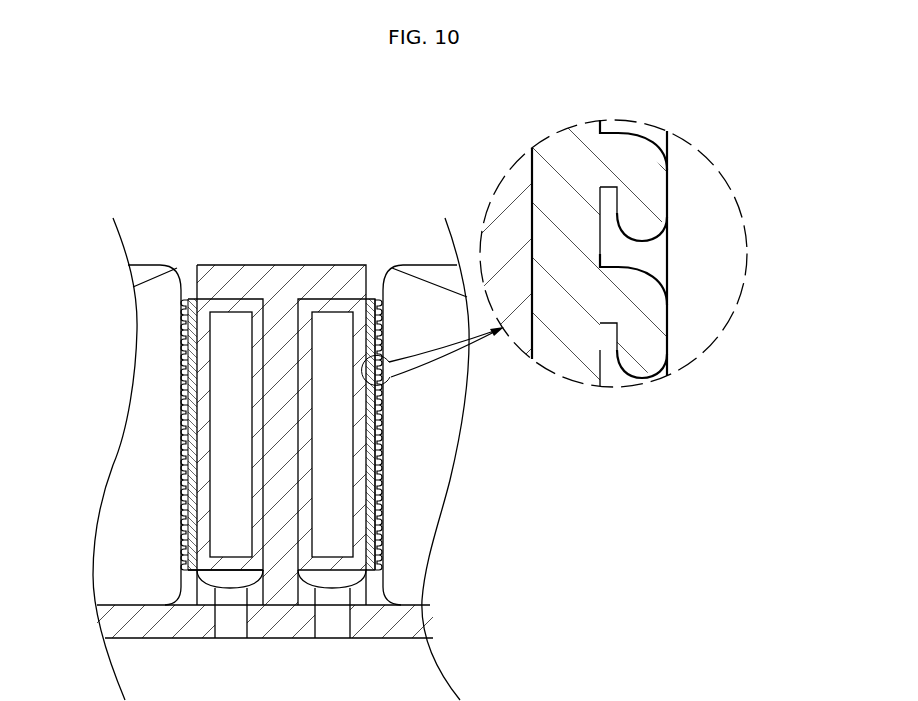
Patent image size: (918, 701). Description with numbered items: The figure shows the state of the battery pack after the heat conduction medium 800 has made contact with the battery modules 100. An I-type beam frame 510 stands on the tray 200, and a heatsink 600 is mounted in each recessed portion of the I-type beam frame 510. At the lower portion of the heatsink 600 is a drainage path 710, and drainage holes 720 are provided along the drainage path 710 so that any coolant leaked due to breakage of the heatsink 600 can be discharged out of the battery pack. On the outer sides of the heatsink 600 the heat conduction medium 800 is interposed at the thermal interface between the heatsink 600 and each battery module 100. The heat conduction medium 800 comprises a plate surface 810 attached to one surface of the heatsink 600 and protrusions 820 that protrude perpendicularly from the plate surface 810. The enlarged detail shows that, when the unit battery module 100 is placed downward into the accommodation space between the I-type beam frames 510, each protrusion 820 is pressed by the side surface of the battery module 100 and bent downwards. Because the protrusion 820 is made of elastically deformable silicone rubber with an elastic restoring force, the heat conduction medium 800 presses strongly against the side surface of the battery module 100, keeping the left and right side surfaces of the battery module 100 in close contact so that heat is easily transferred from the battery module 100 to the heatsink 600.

The battery module 100 is at (139, 263).
The tray 200 is at (285, 629).
The I-type beam frame 510 is at (214, 257).
The heatsink 600 is at (326, 300).
The drainage path 710 is at (230, 583).
The drainage holes 720 is at (232, 620).
The heat conduction medium 800 is at (168, 477).
The plate surface 810 is at (565, 153).
The protrusion 820 is at (648, 187).